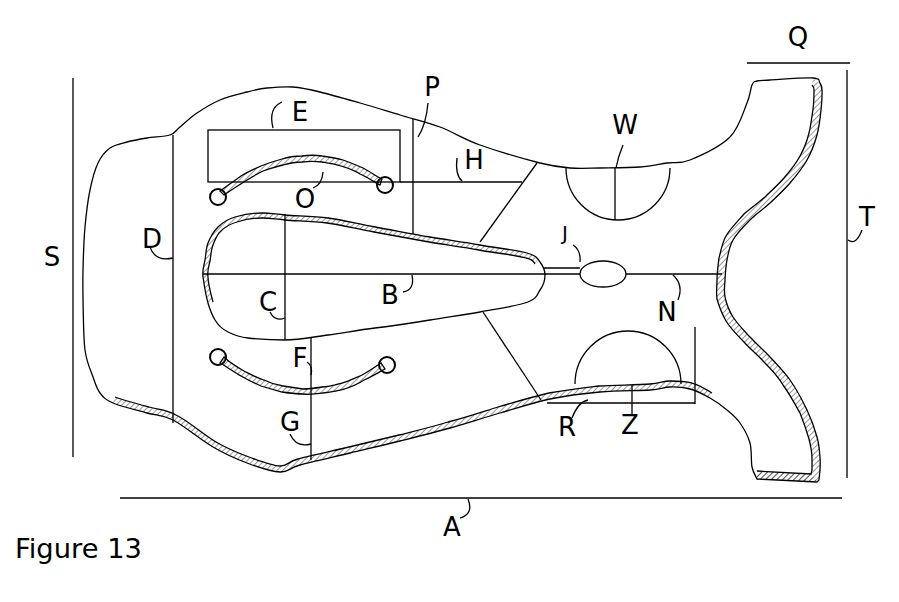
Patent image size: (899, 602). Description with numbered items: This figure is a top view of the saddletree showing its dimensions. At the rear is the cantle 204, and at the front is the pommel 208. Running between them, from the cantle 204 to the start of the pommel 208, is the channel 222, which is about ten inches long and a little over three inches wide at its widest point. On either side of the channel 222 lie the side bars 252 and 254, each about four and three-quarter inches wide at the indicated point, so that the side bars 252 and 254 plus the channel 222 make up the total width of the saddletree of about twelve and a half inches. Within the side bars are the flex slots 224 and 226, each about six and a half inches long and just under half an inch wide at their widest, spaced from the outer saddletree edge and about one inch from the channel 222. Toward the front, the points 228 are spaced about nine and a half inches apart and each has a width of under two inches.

The cantle 204 is at (108, 365).
The pommel 208 is at (716, 207).
The channel 222 is at (391, 276).
The flex slot 224 is at (275, 162).
The flex slot 226 is at (240, 372).
The points 228 is at (788, 460).
The side bar 252 is at (430, 160).
The side bar 254 is at (416, 393).